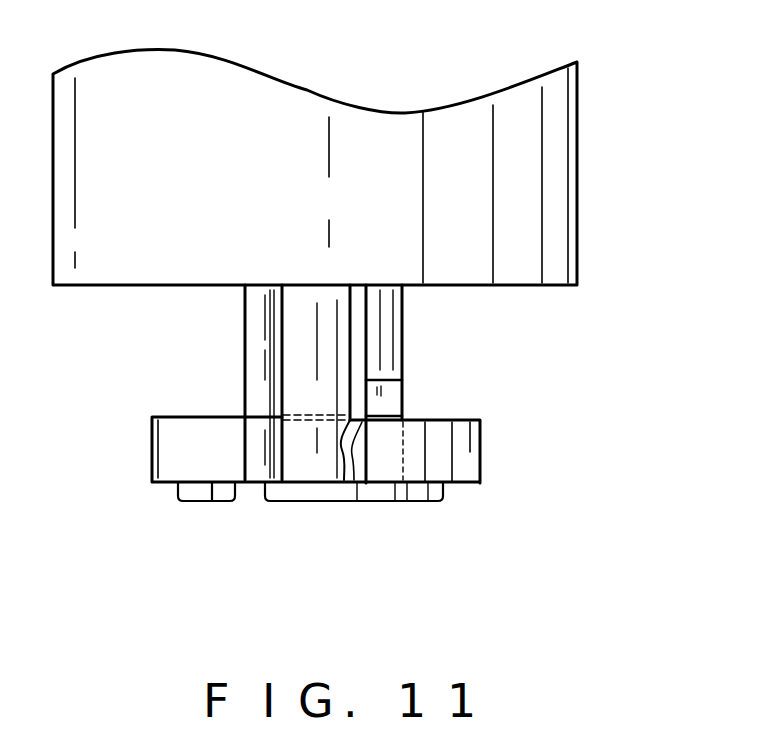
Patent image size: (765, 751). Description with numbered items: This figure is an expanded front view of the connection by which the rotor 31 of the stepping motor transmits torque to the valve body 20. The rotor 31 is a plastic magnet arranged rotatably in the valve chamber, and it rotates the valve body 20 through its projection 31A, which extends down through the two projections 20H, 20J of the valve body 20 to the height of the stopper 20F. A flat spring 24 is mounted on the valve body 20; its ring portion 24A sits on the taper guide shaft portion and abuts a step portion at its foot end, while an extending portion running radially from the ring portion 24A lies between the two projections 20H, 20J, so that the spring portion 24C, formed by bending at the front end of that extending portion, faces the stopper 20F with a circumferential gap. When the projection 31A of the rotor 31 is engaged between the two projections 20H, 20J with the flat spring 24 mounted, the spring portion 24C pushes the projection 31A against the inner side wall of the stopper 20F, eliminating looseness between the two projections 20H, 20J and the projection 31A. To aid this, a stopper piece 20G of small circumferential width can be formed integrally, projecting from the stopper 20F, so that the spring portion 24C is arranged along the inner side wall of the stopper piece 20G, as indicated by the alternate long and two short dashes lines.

The rotor 31 is at (560, 237).
The projection 20H is at (302, 338).
The projection 20J is at (407, 335).
The flat spring 24 is at (378, 414).
The ring portion 24A is at (315, 413).
The spring portion 24C is at (340, 482).
The valve body 20 is at (480, 453).
The stopper 20F is at (262, 470).
The stopper piece 20G is at (388, 455).
The projection 31A is at (313, 482).